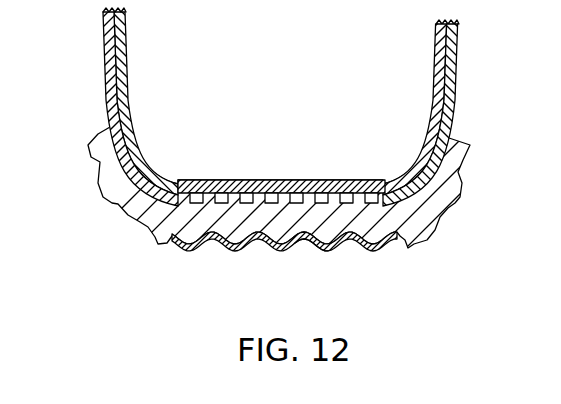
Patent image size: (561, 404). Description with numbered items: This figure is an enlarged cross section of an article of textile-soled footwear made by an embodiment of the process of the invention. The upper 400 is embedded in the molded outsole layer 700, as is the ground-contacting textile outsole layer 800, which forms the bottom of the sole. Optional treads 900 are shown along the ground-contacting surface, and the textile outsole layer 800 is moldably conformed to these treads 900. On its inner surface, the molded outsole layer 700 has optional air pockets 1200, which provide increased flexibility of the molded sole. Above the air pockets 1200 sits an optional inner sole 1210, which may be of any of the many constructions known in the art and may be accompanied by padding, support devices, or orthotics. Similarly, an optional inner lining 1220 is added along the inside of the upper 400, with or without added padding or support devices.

The upper 400 is at (106, 100).
The molded outsole layer 700 is at (462, 201).
The ground-contacting textile outsole layer 800 is at (363, 251).
The treads 900 is at (312, 252).
The air pockets 1200 is at (218, 196).
The inner sole 1210 is at (272, 181).
The inner lining 1220 is at (128, 93).